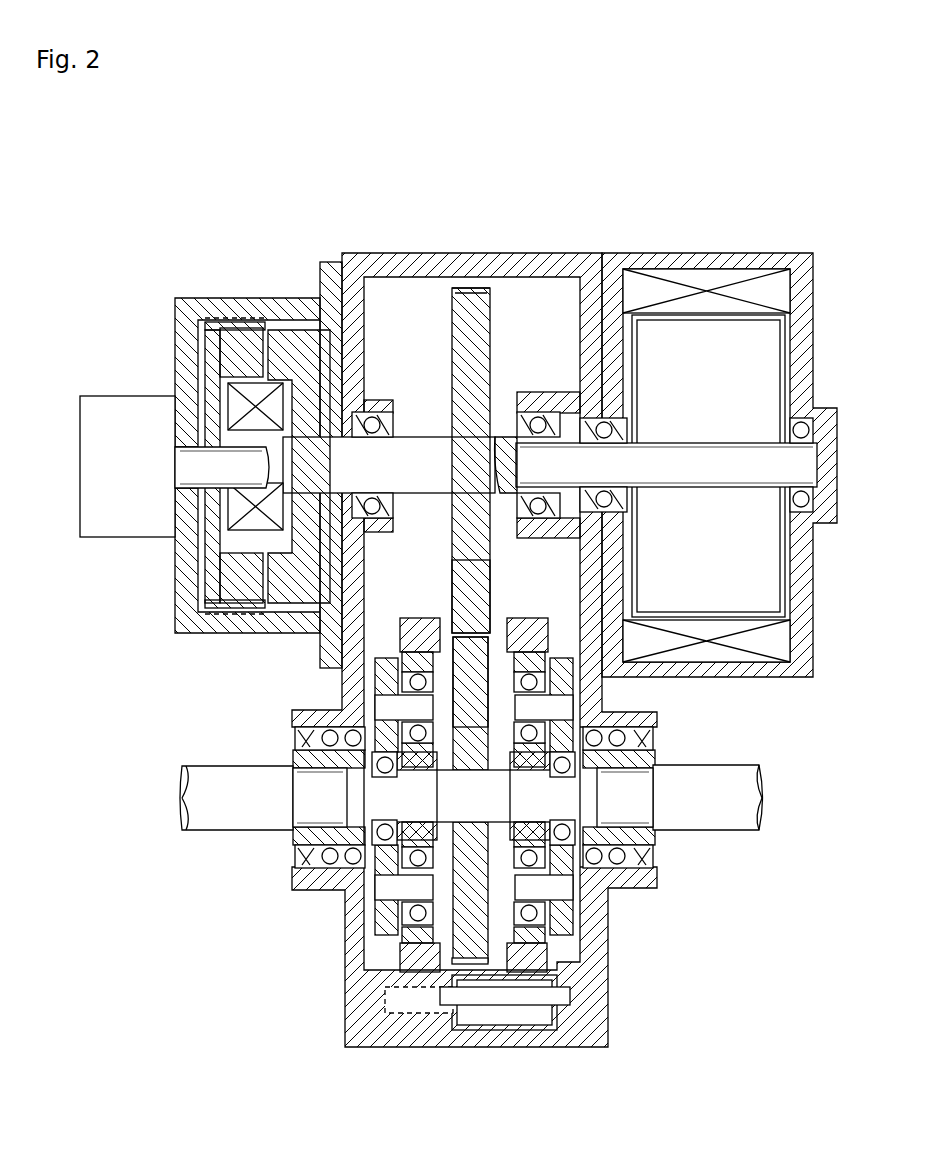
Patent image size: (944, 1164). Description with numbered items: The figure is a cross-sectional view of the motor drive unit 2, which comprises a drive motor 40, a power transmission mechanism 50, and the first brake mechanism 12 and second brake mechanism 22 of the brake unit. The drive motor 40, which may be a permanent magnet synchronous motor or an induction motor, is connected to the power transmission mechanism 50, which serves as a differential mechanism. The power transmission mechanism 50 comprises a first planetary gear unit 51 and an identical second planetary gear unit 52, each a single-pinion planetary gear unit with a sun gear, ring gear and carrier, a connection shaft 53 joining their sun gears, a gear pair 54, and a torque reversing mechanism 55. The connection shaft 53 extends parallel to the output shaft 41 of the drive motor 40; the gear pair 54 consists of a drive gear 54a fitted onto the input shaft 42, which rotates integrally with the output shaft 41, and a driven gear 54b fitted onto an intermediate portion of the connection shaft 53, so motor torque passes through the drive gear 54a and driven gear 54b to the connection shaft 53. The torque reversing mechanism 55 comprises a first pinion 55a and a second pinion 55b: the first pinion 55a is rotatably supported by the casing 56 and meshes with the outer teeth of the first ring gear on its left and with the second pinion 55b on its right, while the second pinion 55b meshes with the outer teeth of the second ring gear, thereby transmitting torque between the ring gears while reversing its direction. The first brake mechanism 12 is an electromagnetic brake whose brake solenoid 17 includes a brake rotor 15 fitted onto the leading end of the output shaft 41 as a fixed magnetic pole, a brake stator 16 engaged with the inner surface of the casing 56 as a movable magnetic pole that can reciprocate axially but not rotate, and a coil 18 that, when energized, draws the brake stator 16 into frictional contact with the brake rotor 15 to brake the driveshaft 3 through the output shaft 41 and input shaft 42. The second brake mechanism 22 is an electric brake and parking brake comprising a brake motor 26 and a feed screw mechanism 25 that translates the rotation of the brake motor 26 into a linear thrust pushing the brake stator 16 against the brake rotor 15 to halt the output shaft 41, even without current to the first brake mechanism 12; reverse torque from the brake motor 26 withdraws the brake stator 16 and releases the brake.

The motor drive unit 2 is at (714, 167).
The driveshaft 3 is at (216, 775).
The first brake mechanism 12 is at (358, 214).
The brake rotor 15 is at (316, 330).
The brake stator 16 is at (242, 330).
The brake solenoid 17 is at (272, 330).
The coil 18 is at (292, 398).
The second brake mechanism 22 is at (170, 350).
The feed screw mechanism 25 is at (190, 425).
The brake motor 26 is at (118, 408).
The drive motor 40 is at (746, 354).
The output shaft 41 is at (682, 455).
The input shaft 42 is at (436, 455).
The power transmission mechanism 50 is at (735, 906).
The first planetary gear unit 51 is at (392, 959).
The second planetary gear unit 52 is at (568, 945).
The connection shaft 53 is at (500, 822).
The gear pair 54 is at (748, 706).
The drive gear 54a is at (480, 578).
The driven gear 54b is at (472, 708).
The torque reversing mechanism 55 is at (508, 1090).
The first pinion 55a is at (422, 1018).
The second pinion 55b is at (498, 1012).
The casing 56 is at (224, 630).